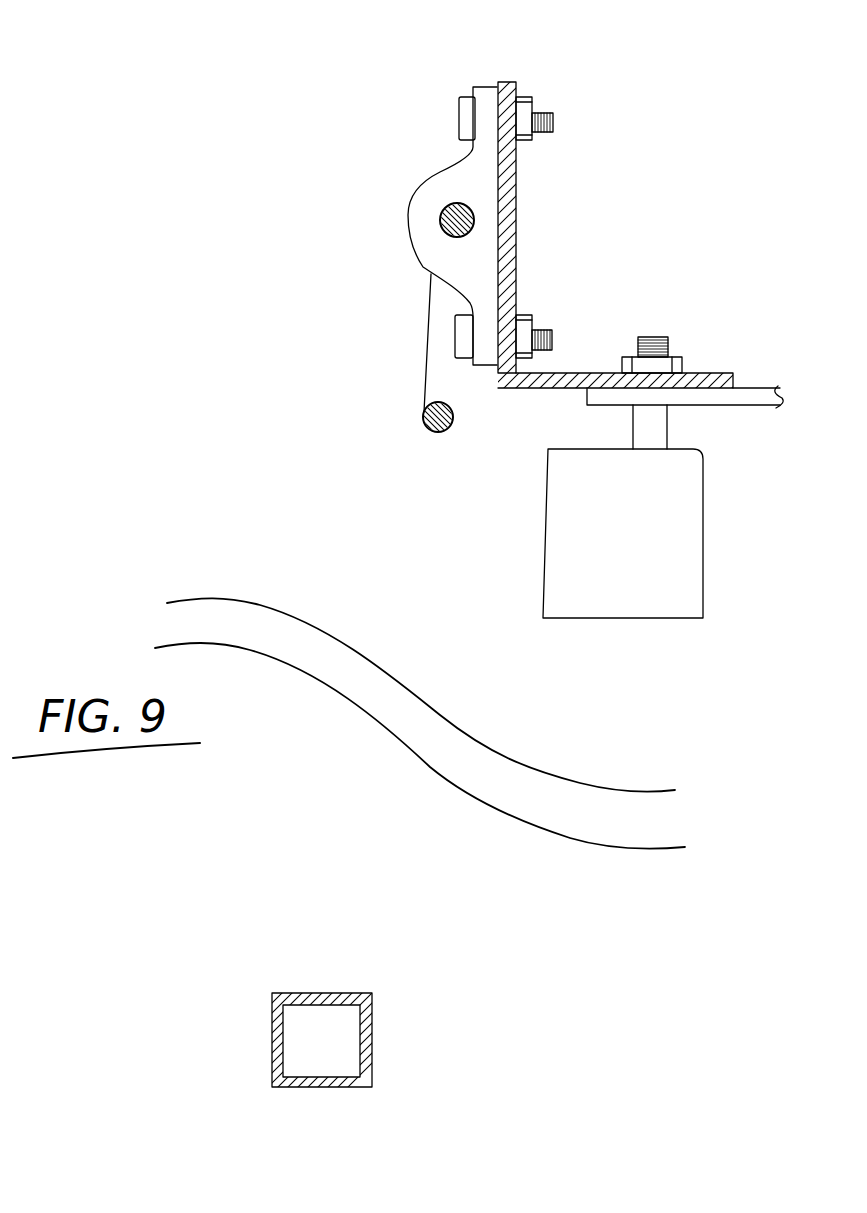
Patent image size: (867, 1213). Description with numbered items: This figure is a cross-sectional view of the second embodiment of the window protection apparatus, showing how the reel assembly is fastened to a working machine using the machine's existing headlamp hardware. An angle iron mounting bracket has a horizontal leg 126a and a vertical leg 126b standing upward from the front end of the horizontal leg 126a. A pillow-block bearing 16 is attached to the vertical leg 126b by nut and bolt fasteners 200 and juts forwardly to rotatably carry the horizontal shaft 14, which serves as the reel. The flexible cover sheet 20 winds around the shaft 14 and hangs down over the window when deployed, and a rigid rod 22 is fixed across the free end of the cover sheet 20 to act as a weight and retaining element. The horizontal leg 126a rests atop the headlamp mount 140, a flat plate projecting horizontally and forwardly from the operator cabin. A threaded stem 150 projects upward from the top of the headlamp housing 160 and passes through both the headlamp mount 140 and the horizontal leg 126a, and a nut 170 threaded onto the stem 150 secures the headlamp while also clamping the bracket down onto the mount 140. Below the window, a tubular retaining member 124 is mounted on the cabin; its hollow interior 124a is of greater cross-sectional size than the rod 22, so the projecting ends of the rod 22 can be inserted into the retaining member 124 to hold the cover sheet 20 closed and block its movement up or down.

The horizontal shaft 14 is at (440, 230).
The pillow-block bearings 16 is at (421, 171).
The cover sheet 20 is at (422, 350).
The rod 22 is at (437, 433).
The tubular retaining members 124 is at (334, 982).
The hollow interior 124a is at (315, 1055).
The horizontal leg 126a is at (707, 373).
The vertical leg 126b is at (517, 230).
The headlamp mount 140 is at (740, 404).
The threaded stem 150 is at (643, 430).
The headlamp housing 160 is at (633, 603).
The nut 170 is at (612, 371).
The nut and bolt fasteners 200 is at (453, 79).